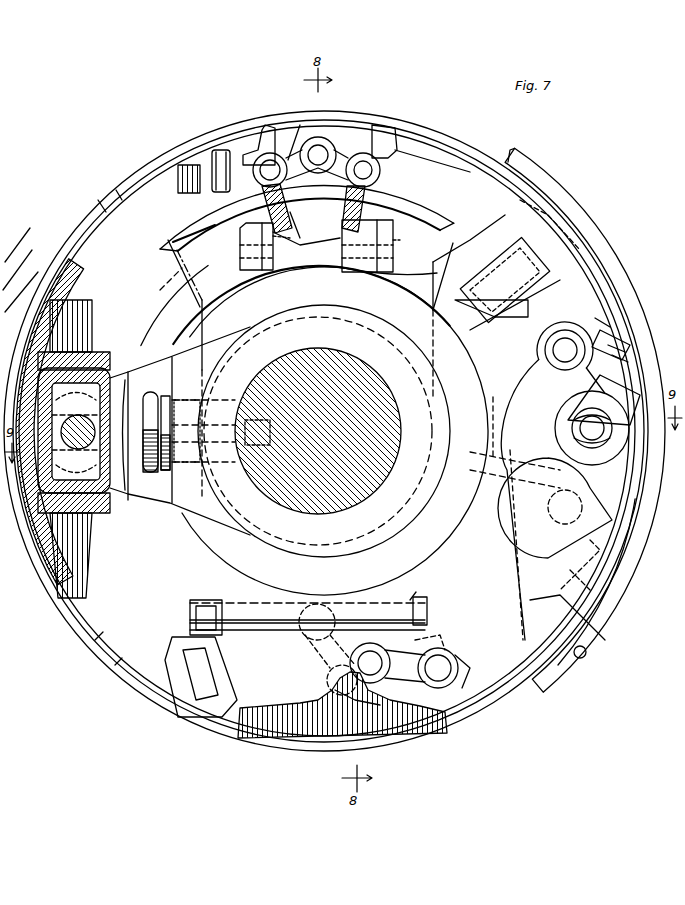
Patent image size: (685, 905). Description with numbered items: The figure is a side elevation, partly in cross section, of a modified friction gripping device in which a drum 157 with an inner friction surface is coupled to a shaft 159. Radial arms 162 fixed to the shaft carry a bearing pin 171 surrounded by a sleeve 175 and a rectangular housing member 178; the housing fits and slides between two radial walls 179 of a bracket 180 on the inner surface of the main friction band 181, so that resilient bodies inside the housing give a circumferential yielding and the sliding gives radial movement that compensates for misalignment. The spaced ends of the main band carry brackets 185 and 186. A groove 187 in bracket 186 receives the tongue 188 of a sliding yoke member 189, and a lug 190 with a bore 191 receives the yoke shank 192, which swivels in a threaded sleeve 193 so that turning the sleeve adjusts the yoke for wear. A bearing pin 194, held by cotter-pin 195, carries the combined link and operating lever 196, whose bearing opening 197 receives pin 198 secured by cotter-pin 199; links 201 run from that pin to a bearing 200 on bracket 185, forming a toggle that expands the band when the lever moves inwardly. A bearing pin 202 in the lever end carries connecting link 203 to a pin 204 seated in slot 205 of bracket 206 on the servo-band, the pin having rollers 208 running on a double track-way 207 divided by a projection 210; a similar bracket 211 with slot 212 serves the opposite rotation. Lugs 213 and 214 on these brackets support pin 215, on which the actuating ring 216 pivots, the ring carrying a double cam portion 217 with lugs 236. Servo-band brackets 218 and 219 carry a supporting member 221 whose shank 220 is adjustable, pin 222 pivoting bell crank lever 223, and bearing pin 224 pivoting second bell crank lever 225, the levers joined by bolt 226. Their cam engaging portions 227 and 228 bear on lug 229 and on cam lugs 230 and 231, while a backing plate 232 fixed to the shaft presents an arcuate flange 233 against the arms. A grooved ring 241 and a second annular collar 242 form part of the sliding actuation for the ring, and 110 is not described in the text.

The frame 110 is at (15, 238).
The drum 157 is at (548, 180).
The shaft 159 is at (380, 412).
The radial arms 162 is at (203, 498).
The bearing pin 171 is at (80, 425).
The sleeve 175 is at (84, 442).
The housing member 178 is at (132, 386).
The radial walls 179 is at (82, 540).
The bracket 180 is at (60, 598).
The main friction band 181 is at (110, 210).
The bracket 185 is at (604, 636).
The bracket 186 is at (612, 336).
The groove 187 is at (602, 330).
The tongue 188 is at (616, 346).
The sliding yoke member 189 is at (505, 380).
The lug 190 is at (433, 300).
The bore 191 is at (520, 215).
The shank 192 is at (495, 308).
The threaded sleeve 193 is at (478, 245).
The bearing pin 194 is at (570, 345).
The cotter-pin 195 is at (586, 340).
The combined link and operating lever 196 is at (585, 655).
The bearing opening 197 is at (574, 440).
The pin 198 is at (572, 428).
The cotter-pin 199 is at (580, 420).
The bearing 200 is at (486, 474).
The links 201 is at (486, 457).
The bearing pin 202 is at (378, 680).
The connecting link 203 is at (420, 672).
The pin 204 is at (440, 688).
The slot 205 is at (465, 680).
The bracket 206 is at (500, 705).
The double track-way 207 is at (352, 695).
The rollers 208 is at (445, 650).
The projection 210 is at (302, 668).
The second bracket 211 is at (180, 672).
The slot 212 is at (200, 690).
The lug 213 is at (420, 600).
The lug 214 is at (190, 604).
The pin 215 is at (282, 618).
The actuating ring 216 is at (482, 494).
The double cam portion 217 is at (326, 245).
The bracket 218 is at (385, 140).
The bracket 219 is at (250, 160).
The shank 220 is at (200, 193).
The supporting member 221 is at (270, 152).
The pin 222 is at (278, 160).
The bell crank lever 223 is at (262, 196).
The bearing pin 224 is at (398, 158).
The second bell crank lever 225 is at (380, 180).
The bolt 226 is at (320, 148).
The cam engaging portion 227 is at (258, 270).
The cam engaging portion 228 is at (362, 272).
The lug 229 is at (292, 262).
The cam lug 230 is at (372, 243).
The cam lug 231 is at (246, 253).
The backing plate 232 is at (200, 310).
The arcuate flange 233 is at (172, 238).
The lugs 236 is at (420, 285).
The grooved ring 241 is at (17, 263).
The second annular collar 242 is at (21, 285).